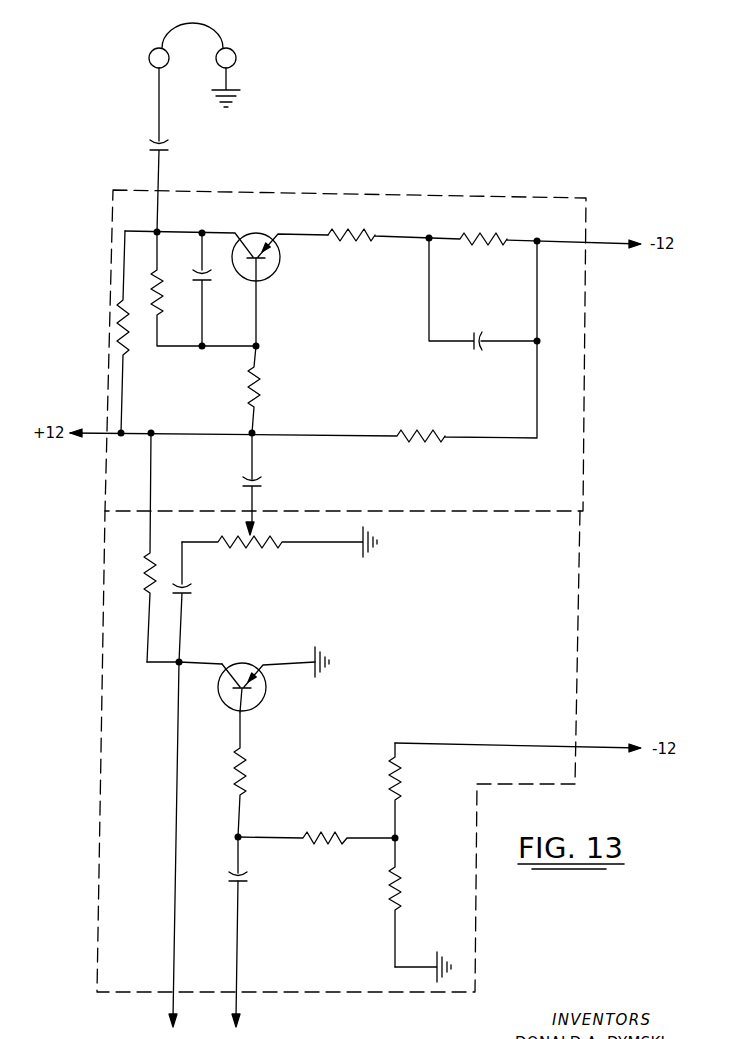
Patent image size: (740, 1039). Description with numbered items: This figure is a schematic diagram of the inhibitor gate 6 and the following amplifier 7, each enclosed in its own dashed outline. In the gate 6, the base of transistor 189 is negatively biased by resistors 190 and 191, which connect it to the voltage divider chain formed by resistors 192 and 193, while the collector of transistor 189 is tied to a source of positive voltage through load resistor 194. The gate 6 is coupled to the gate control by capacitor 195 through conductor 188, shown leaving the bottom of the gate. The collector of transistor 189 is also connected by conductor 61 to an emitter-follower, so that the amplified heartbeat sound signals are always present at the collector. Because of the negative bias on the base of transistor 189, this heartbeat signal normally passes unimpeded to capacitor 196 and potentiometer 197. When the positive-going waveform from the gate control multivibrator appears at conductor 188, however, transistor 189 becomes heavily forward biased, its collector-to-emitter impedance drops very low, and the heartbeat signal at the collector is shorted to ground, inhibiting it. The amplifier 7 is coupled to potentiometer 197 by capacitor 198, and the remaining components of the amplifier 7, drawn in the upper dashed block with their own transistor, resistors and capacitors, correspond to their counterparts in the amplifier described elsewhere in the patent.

The inhibitor gate 6 is at (578, 607).
The amplifier 7 is at (585, 367).
The conductor 61 is at (172, 1003).
The conductor 188 is at (237, 1003).
The transistor 189 is at (245, 663).
The resistor 190 is at (338, 798).
The resistor 191 is at (243, 748).
The resistor 192 is at (402, 882).
The resistor 193 is at (403, 773).
The load resistor 194 is at (148, 557).
The capacitor 195 is at (247, 885).
The capacitor 196 is at (189, 594).
The potentiometer 197 is at (252, 547).
The capacitor 198 is at (256, 478).